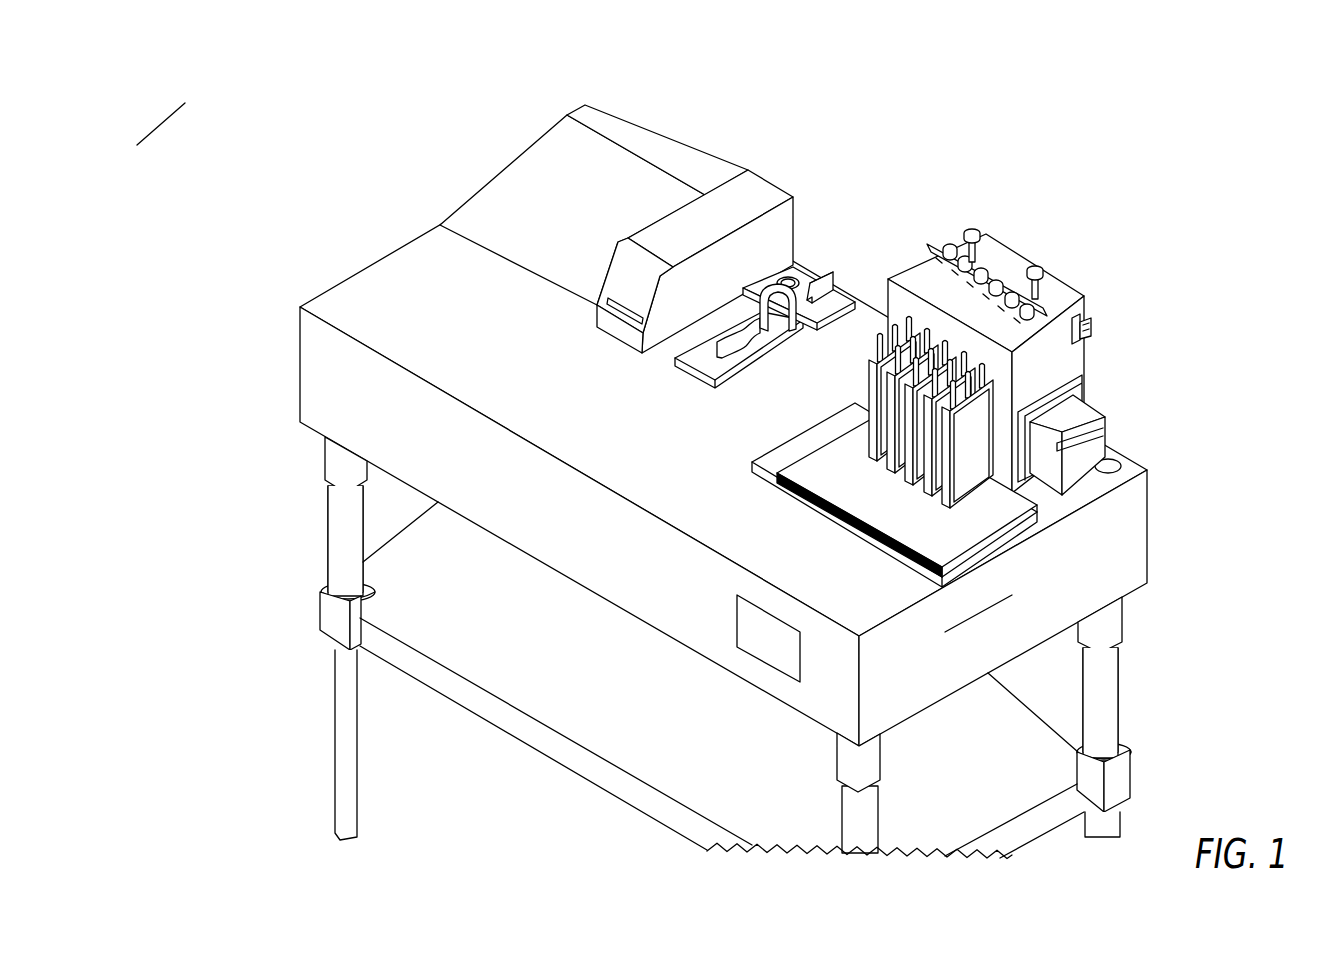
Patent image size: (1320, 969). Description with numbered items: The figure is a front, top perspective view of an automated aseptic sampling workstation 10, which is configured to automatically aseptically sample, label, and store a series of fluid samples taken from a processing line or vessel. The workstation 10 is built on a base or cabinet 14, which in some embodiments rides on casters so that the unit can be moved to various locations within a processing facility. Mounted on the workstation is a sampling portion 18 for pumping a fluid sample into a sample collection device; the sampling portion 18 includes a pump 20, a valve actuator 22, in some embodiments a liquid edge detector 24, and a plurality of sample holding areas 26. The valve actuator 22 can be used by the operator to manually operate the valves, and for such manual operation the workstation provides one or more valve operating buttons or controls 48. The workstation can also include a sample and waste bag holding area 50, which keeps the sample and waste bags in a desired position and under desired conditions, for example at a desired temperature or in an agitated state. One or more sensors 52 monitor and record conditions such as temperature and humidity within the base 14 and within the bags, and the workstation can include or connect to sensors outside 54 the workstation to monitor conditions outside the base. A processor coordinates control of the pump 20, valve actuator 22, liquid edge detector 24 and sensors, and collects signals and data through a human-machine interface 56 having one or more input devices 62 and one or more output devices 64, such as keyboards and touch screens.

The workstation 10 is at (887, 153).
The base or cabinet 14 is at (298, 360).
The sampling portion 18 is at (1055, 169).
The pump 20 is at (1077, 423).
The valve actuator 22 is at (932, 270).
The liquid edge detector 24 is at (1087, 313).
The sample holding areas 26 is at (883, 453).
The valve operating buttons or controls 48 is at (768, 642).
The sample and waste bag holding area 50 is at (793, 520).
The sensors 52 is at (985, 630).
The sensors outside the workstation 54 is at (162, 125).
The human-machine interface 56 is at (575, 200).
The input devices 62 is at (692, 375).
The output devices 64 is at (615, 333).